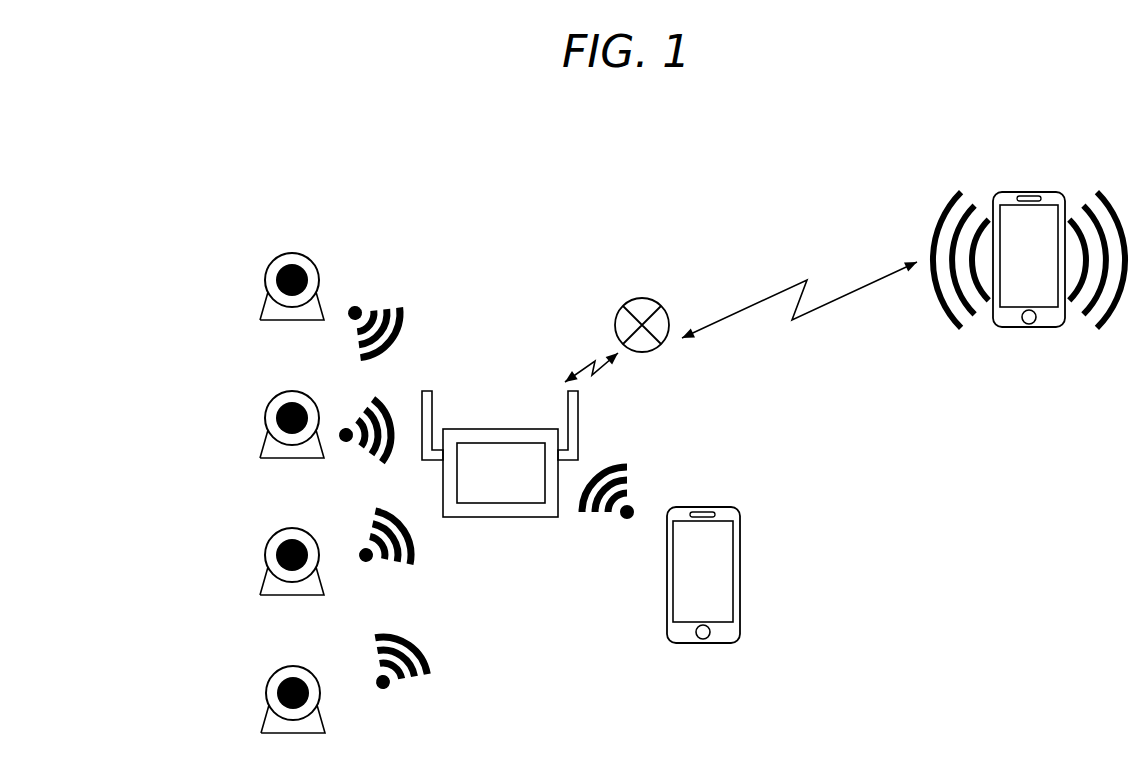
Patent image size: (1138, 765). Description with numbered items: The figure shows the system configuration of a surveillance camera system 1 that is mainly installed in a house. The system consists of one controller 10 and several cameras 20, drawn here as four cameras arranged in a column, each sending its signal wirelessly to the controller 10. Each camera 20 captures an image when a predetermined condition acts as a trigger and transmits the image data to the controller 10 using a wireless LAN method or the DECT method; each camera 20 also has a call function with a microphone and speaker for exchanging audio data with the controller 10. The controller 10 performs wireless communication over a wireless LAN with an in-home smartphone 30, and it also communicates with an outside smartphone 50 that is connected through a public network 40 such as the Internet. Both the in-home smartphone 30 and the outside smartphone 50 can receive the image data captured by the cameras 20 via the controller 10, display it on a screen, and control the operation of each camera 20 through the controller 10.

The surveillance camera system 1 is at (378, 213).
The controller 10 is at (510, 518).
The camera 20 is at (265, 280).
The in-home smartphone 30 is at (705, 644).
The public network 40 is at (640, 298).
The outside smartphone 50 is at (1030, 328).